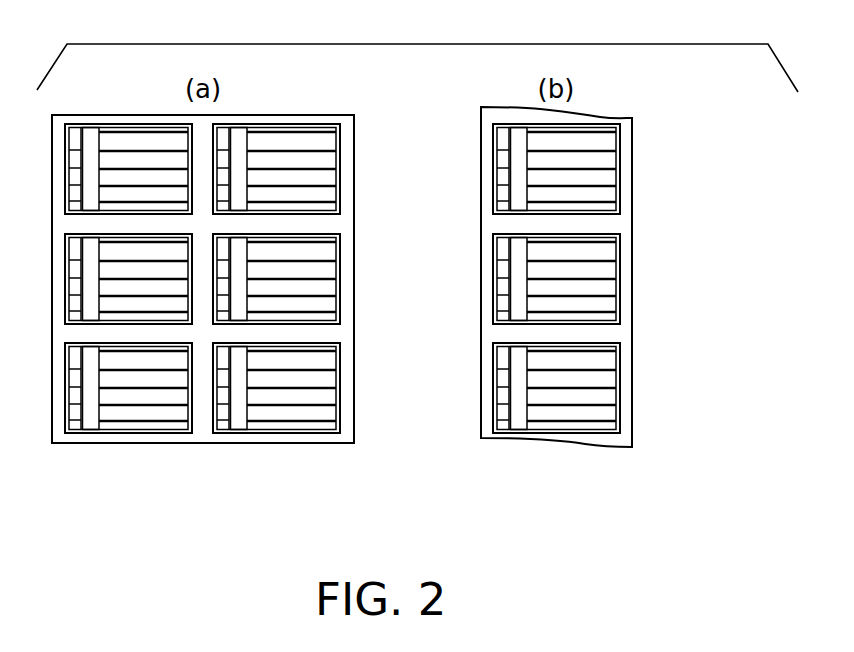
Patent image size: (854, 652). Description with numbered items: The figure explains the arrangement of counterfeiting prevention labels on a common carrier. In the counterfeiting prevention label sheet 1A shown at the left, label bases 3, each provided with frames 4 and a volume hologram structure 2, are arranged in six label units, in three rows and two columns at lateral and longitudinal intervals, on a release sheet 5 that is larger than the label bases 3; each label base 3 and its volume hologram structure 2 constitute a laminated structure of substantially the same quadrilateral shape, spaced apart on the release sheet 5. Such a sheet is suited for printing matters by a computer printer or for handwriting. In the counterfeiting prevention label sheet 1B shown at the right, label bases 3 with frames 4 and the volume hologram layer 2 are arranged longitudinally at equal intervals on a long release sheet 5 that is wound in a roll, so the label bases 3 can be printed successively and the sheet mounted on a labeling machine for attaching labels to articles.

The counterfeiting prevention label sheet 1A is at (332, 88).
The counterfeiting prevention label sheet 1B is at (605, 88).
The volume hologram structure 2 is at (383, 314).
The label base 3 is at (342, 356).
The frames 4 is at (315, 389).
The release sheet 5 is at (377, 249).